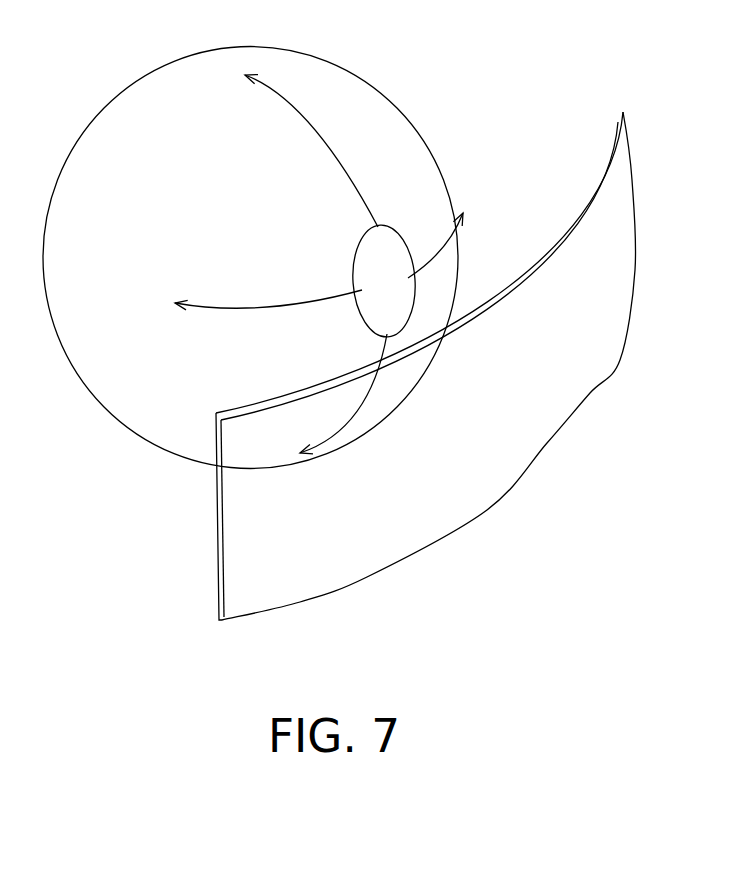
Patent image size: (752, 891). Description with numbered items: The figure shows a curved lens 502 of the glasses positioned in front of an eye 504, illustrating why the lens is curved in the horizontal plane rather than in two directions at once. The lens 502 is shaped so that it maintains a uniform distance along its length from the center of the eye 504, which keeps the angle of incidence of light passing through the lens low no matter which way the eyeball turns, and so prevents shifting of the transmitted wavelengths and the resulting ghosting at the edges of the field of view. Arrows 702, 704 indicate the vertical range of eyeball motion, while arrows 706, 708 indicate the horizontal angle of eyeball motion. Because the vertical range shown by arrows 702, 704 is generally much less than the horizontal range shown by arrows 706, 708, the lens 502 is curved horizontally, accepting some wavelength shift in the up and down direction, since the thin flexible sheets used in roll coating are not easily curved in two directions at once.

The curved lens 502 is at (577, 378).
The eye 504 is at (177, 398).
The vertical eyeball motion arrow 702 is at (287, 83).
The vertical eyeball motion arrow 704 is at (343, 437).
The horizontal eyeball motion arrow 706 is at (463, 245).
The horizontal eyeball motion arrow 708 is at (280, 302).